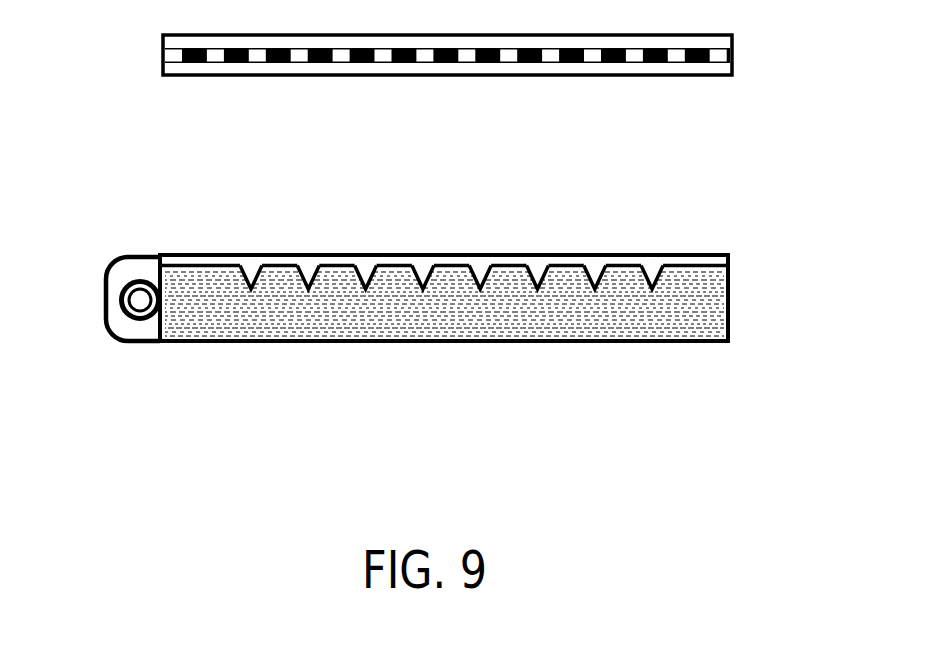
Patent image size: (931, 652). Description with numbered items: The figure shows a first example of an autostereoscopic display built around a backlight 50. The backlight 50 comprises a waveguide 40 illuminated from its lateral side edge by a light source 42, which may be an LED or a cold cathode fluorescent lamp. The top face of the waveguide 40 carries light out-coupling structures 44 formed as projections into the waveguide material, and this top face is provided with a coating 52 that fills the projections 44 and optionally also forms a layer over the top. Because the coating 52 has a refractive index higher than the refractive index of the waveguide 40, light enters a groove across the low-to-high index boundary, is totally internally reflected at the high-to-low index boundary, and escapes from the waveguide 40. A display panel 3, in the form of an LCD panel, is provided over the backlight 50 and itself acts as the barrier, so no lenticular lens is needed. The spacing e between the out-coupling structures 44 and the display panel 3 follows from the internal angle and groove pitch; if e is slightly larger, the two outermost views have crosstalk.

The display panel 3 is at (688, 77).
The waveguide 40 is at (389, 297).
The light source 42 is at (112, 332).
The light out-coupling structures 44 is at (313, 256).
The backlight 50 is at (137, 210).
The coating 52 is at (680, 254).
The spacing e is at (252, 284).